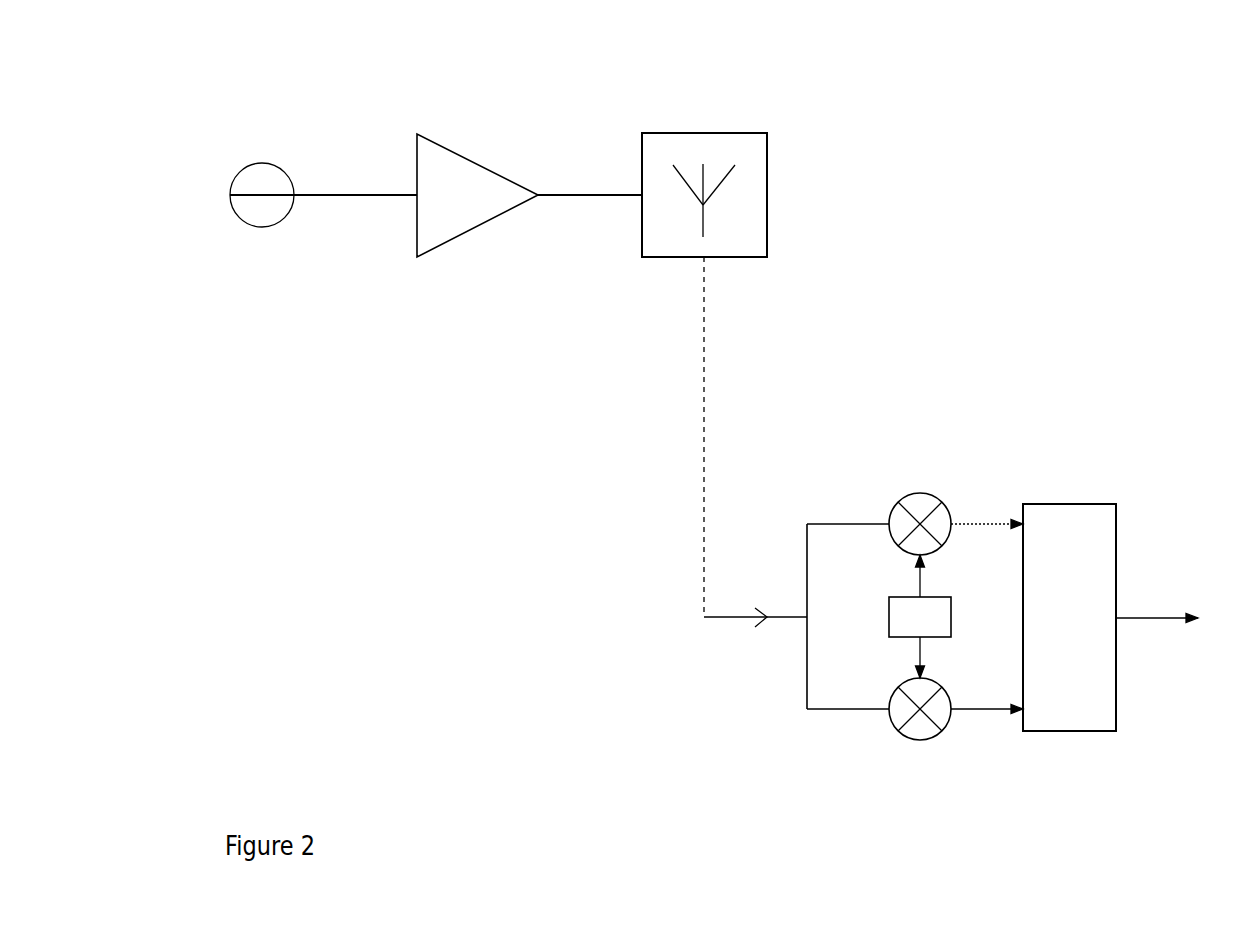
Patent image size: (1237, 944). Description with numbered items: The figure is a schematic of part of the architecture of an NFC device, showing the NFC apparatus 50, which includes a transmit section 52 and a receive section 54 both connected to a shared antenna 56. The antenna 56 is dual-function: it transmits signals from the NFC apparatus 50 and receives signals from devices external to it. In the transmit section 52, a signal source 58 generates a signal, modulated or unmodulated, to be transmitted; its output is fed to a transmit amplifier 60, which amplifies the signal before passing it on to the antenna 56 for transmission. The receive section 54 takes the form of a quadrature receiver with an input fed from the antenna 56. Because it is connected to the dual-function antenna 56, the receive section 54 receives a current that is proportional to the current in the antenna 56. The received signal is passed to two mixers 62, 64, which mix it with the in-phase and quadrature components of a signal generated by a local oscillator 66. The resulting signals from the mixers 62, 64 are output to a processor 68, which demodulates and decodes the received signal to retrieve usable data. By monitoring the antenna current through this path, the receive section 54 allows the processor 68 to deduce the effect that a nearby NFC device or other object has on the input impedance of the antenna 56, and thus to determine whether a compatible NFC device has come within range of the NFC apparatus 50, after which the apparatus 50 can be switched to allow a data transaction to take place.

The NFC apparatus 50 is at (1107, 133).
The transmit section 52 is at (395, 102).
The receive section 54 is at (1065, 439).
The antenna 56 is at (745, 132).
The signal source 58 is at (260, 227).
The transmit amplifier 60 is at (438, 245).
The mixer 62 is at (919, 493).
The mixer 64 is at (918, 742).
The local oscillator 66 is at (890, 638).
The processor 68 is at (1074, 732).